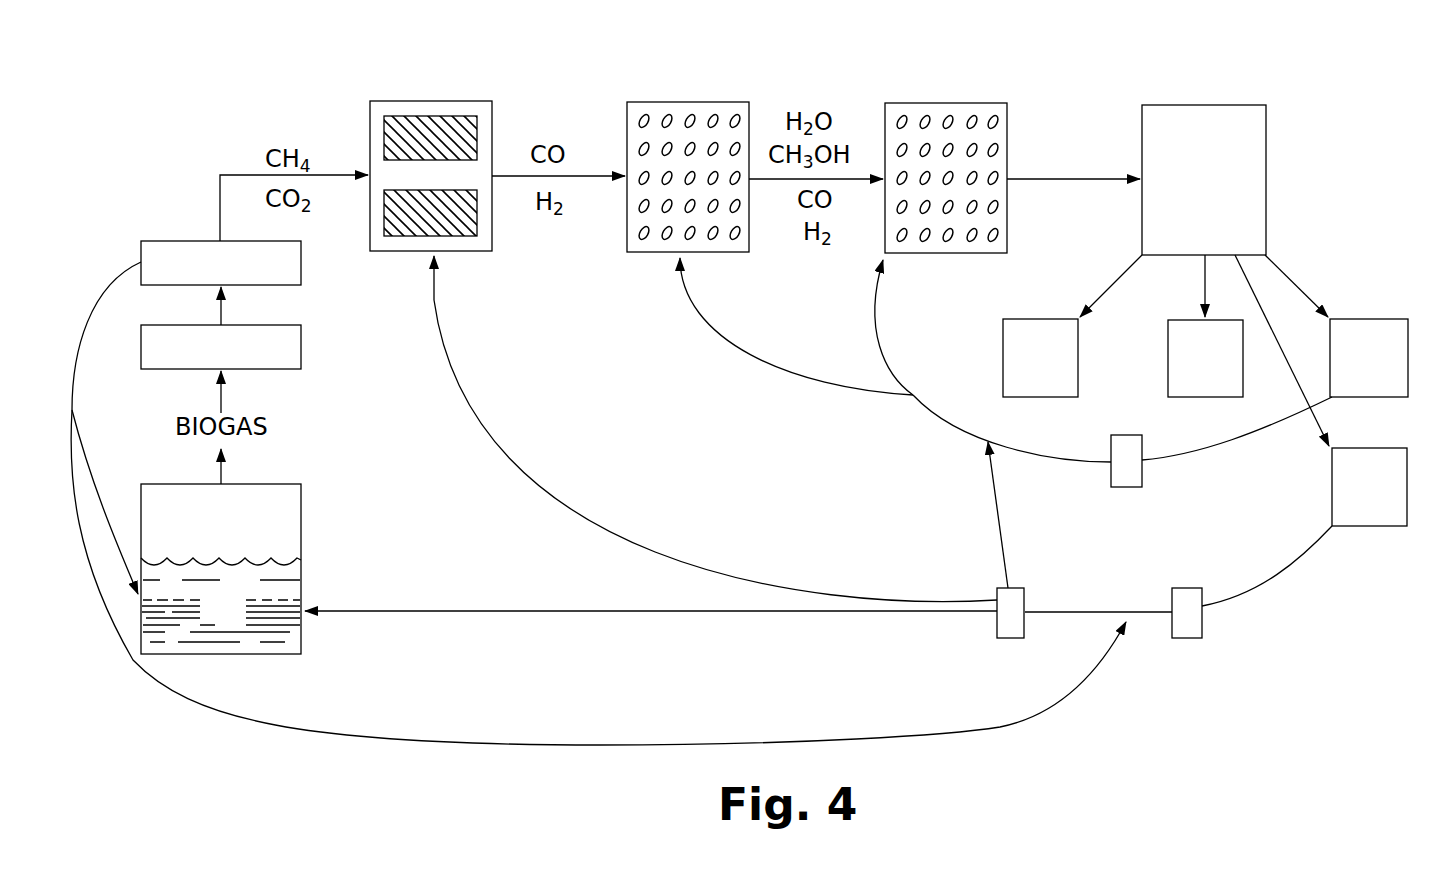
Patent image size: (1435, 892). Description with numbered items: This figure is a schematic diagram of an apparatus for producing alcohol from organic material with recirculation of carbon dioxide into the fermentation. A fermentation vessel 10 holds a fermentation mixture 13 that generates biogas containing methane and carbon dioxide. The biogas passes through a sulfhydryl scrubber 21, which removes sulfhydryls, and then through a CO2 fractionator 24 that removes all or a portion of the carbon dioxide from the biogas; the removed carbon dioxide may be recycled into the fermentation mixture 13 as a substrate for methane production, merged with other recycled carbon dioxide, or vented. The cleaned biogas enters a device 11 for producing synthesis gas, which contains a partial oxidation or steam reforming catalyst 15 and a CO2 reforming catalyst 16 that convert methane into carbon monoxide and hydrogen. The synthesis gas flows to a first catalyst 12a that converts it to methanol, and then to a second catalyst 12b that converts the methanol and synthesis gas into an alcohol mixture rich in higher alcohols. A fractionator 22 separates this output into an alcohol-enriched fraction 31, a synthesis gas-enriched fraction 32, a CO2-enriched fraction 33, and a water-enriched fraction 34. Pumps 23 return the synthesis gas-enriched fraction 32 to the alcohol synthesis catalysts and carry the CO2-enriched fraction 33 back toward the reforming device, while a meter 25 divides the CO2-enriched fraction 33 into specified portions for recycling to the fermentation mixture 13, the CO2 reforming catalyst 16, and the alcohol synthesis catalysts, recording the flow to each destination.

The fermentation vessel 10 is at (141, 484).
The device for producing synthesis gas 11 is at (430, 101).
The first catalyst 12a is at (667, 117).
The second catalyst 12b is at (948, 117).
The fermentation mixture 13 is at (238, 613).
The partial oxidation catalyst or steam reforming catalyst 15 is at (407, 116).
The CO2 reforming catalyst 16 is at (397, 237).
The sulfhydryl scrubber 21 is at (221, 347).
The fractionator 22 is at (1223, 193).
The pump 23 is at (1111, 448).
The CO2 fractionator 24 is at (221, 263).
The meter 25 is at (1027, 637).
The alcohol-enriched fraction 31 is at (1058, 373).
The synthesis gas-enriched fraction 32 is at (1388, 373).
The CO2-enriched fraction 33 is at (1388, 503).
The water-enriched fraction 34 is at (1224, 373).